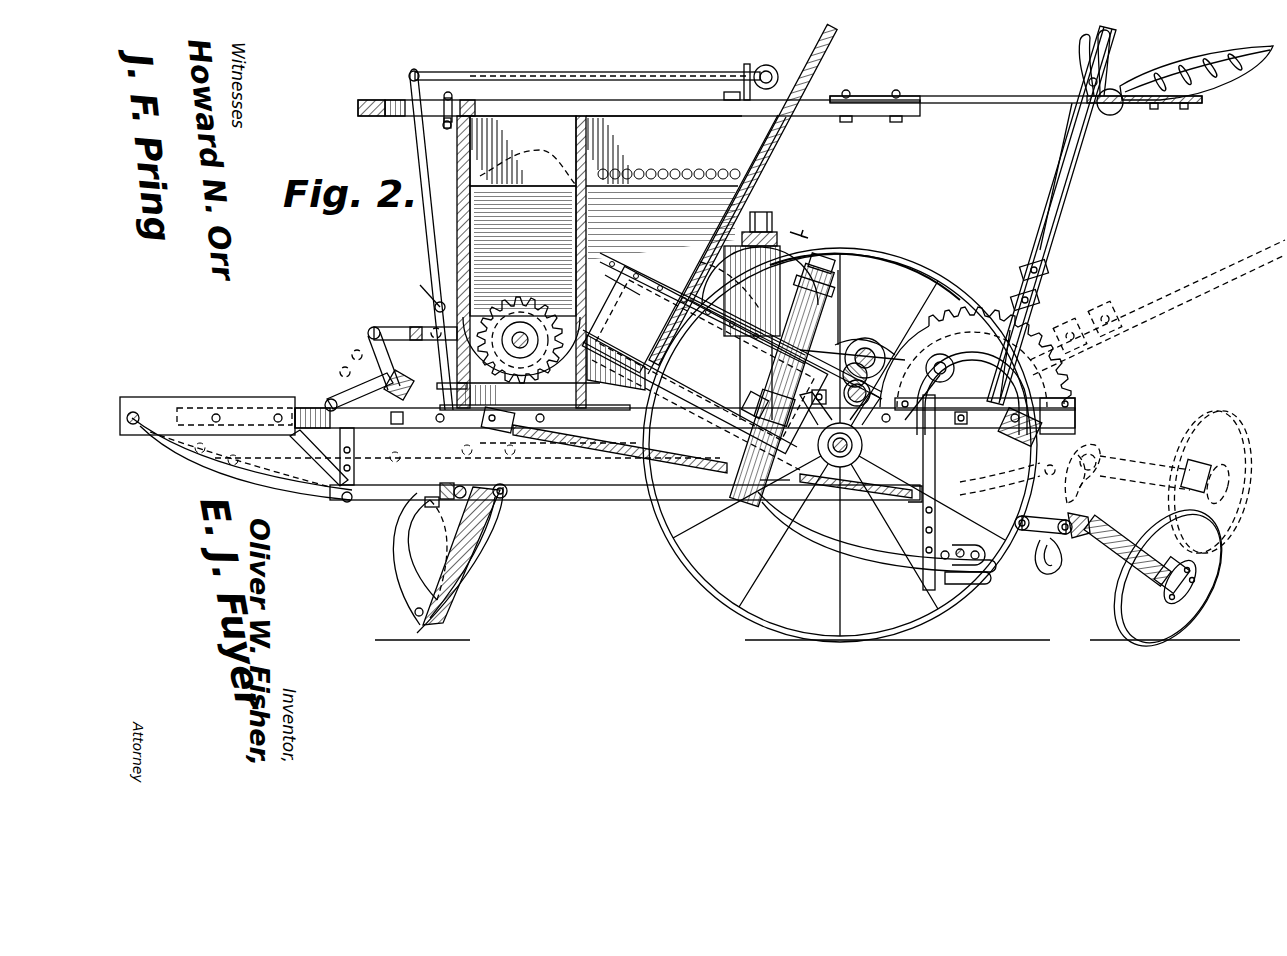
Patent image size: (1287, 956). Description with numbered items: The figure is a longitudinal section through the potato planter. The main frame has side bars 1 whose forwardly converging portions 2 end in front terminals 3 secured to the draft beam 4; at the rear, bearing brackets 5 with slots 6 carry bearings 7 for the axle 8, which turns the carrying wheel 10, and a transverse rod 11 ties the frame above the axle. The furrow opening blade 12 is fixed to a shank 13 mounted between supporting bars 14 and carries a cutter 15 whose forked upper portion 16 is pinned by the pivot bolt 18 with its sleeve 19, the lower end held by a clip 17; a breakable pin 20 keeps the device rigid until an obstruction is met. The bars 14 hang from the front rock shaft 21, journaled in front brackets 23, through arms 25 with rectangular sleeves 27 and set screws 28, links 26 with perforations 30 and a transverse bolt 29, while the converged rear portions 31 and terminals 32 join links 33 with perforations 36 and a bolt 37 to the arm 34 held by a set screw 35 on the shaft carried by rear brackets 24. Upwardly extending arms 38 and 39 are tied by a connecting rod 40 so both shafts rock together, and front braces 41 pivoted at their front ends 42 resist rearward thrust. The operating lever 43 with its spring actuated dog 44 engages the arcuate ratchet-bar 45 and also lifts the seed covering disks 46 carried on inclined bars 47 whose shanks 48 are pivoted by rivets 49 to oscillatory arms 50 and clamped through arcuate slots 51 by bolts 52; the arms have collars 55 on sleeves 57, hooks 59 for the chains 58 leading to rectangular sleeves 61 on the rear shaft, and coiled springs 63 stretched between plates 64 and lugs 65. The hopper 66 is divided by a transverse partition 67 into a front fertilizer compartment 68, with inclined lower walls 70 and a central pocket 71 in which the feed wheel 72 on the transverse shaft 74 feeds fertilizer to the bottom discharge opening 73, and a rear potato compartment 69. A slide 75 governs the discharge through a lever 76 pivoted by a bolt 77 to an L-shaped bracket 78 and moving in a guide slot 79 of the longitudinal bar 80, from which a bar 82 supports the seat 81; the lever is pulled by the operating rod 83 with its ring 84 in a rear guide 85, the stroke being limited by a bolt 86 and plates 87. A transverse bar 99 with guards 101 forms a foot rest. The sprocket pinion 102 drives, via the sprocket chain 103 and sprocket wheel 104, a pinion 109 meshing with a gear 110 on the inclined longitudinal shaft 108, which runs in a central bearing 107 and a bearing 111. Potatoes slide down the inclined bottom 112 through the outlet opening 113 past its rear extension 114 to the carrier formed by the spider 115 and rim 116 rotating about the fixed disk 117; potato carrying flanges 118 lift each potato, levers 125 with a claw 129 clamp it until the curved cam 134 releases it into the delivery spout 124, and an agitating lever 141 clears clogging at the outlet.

The side bars 1 is at (436, 416).
The forwardly converging portions 2 is at (310, 412).
The front terminals 3 is at (190, 410).
The draft beam 4 is at (165, 412).
The bearing brackets 5 is at (840, 418).
The slots 6 is at (754, 328).
The bearings 7 is at (818, 447).
The axle 8 is at (836, 470).
The carrying wheel 10 is at (708, 590).
The transverse rod 11 is at (906, 397).
The furrow opening blade 12 is at (455, 598).
The shank 13 is at (490, 530).
The supporting bars 14 is at (580, 500).
The cutter 15 is at (398, 571).
The forked upper portion 16 is at (447, 480).
The clip 17 is at (414, 613).
The pivot bolt 18 is at (437, 511).
The sleeve 19 is at (475, 480).
The breakable pin 20 is at (508, 490).
The front rock shaft 21 is at (340, 410).
The front brackets 23 is at (457, 457).
The rear brackets 24 is at (1057, 424).
The arms 25 is at (340, 395).
The links 26 is at (312, 450).
The rectangular sleeves 27 is at (383, 382).
The set screws 28 is at (358, 361).
The transverse bolt 29 is at (347, 502).
The perforations 30 is at (355, 474).
The rear portions 31 is at (860, 554).
The terminals 32 is at (966, 552).
The links 33 is at (1000, 482).
The arm 34 is at (972, 399).
The set screw 35 is at (1060, 390).
The perforations 36 is at (968, 578).
The bolt 37 is at (922, 568).
The upwardly extending arm 38 is at (368, 350).
The upwardly extending arm 39 is at (1010, 330).
The connecting rod 40 is at (386, 328).
The front braces 41 is at (205, 470).
The front ends 42 is at (133, 426).
The operating lever 43 is at (1052, 216).
The spring actuated dog 44 is at (1046, 298).
The arcuate ratchet-bar 45 is at (1070, 378).
The seed covering disks 46 is at (1182, 620).
The inclined bars 47 is at (1135, 566).
The shanks 48 is at (1090, 525).
The rivets 49 is at (1020, 531).
The oscillatory arms 50 is at (1018, 516).
The arcuate slots 51 is at (1050, 568).
The bolts 52 is at (1080, 547).
The collars 55 is at (866, 402).
The sleeves 57 is at (917, 375).
The chains 58 is at (1060, 452).
The hooks 59 is at (1048, 470).
The rectangular sleeves 61 is at (1040, 420).
The coiled springs 63 is at (670, 463).
The plates 64 is at (500, 428).
The lugs 65 is at (861, 484).
The hopper 66 is at (610, 90).
The transverse partition 67 is at (600, 214).
The front fertilizer compartment 68 is at (523, 151).
The rear potato compartment 69 is at (664, 151).
The inclined lower walls 70 is at (596, 262).
The central pocket 71 is at (630, 366).
The feed wheel 72 is at (520, 340).
The bottom discharge opening 73 is at (535, 396).
The transverse shaft 74 is at (520, 354).
The slide 75 is at (477, 396).
The lever 76 is at (430, 250).
The bolt 77 is at (434, 306).
The L-shaped bracket 78 is at (417, 288).
The guide slot 79 is at (406, 112).
The longitudinal bar 80 is at (565, 110).
The seat 81 is at (1232, 84).
The bar 82 is at (990, 104).
The operating rod 83 is at (600, 74).
The ring 84 is at (776, 72).
The rear guide 85 is at (747, 66).
The bolt 86 is at (455, 108).
The plates 87 is at (450, 92).
The transverse bar 99 is at (769, 228).
The guards 101 is at (772, 220).
The sprocket pinion 102 is at (540, 316).
The sprocket chain 103 is at (636, 342).
The sprocket wheel 104 is at (871, 336).
The central bearing 107 is at (865, 340).
The inclined longitudinal shaft 108 is at (786, 346).
The pinion 109 is at (855, 346).
The gear 110 is at (872, 371).
The bearing 111 is at (749, 333).
The inclined bottom 112 is at (702, 308).
The outlet opening 113 is at (704, 359).
The rear extension 114 is at (696, 415).
The spider 115 is at (848, 306).
The rim 116 is at (830, 268).
The fixed disk 117 is at (741, 389).
The potato carrying flanges 118 is at (759, 325).
The delivery spout 124 is at (748, 512).
The levers 125 is at (868, 262).
The claw 129 is at (846, 288).
The curved cam 134 is at (740, 478).
The agitating lever 141 is at (735, 232).